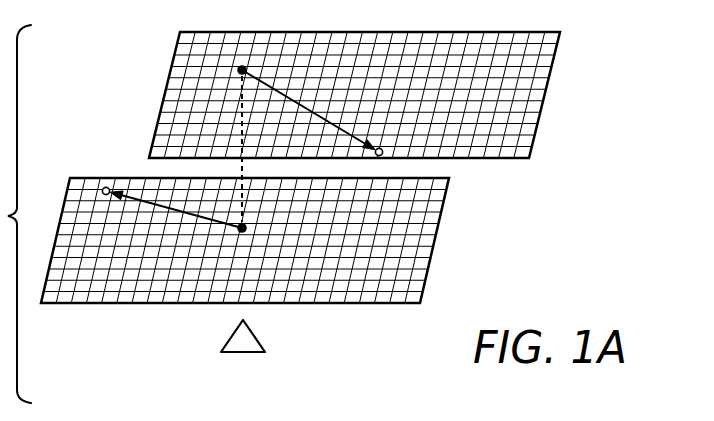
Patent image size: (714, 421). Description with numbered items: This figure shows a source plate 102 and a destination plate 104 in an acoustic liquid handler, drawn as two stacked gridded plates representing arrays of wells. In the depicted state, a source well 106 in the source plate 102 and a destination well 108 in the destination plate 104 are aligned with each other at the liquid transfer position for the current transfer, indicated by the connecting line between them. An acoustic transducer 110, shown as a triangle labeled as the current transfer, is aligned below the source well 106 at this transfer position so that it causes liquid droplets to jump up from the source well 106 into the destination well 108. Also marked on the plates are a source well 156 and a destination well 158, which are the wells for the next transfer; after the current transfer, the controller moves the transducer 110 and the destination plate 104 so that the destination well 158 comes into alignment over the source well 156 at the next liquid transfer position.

The source plate 102 is at (430, 258).
The destination plate 104 is at (550, 75).
The source well 106 is at (242, 228).
The destination well 108 is at (242, 70).
The acoustic transducer 110 is at (232, 337).
The source well 156 is at (106, 187).
The destination well 158 is at (382, 150).